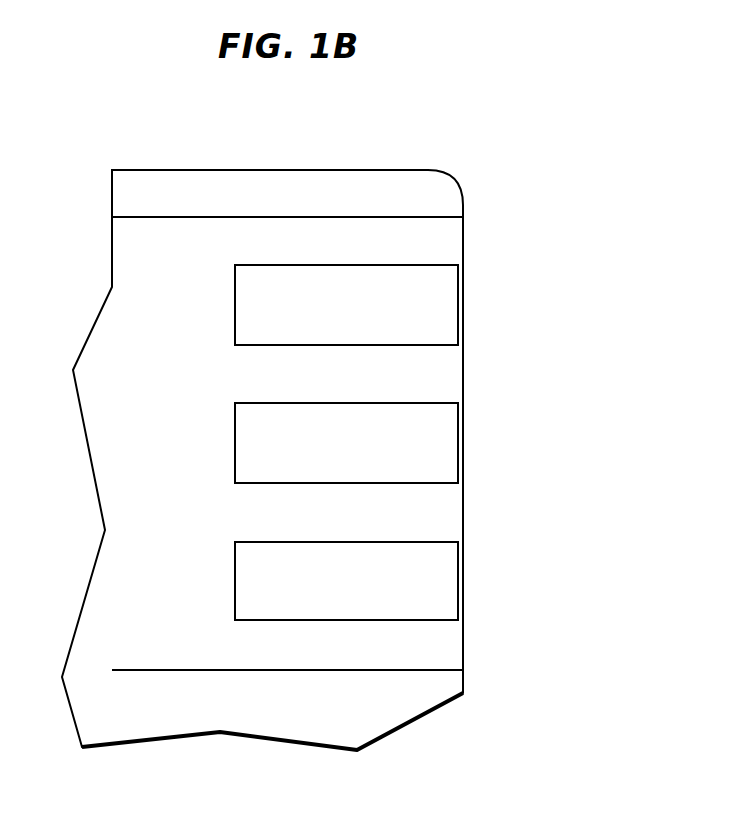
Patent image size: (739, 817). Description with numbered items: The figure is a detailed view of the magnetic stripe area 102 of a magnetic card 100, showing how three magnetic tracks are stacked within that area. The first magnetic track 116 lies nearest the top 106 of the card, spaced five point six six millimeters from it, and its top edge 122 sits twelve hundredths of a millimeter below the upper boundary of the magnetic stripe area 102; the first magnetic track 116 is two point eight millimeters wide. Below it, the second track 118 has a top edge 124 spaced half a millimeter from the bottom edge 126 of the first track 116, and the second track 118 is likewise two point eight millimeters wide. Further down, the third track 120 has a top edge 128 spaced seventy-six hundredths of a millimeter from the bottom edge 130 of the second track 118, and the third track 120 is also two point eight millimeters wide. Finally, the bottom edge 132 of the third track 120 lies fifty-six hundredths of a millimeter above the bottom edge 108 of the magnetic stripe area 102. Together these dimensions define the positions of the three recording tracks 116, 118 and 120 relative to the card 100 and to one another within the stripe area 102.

The card 100 is at (547, 398).
The magnetic stripe area 102 is at (224, 217).
The top of the card 106 is at (313, 170).
The bottom edge of the magnetic stripe area 108 is at (146, 670).
The first magnetic track 116 is at (246, 296).
The second magnetic track 118 is at (246, 434).
The third magnetic track 120 is at (246, 571).
The top edge of the first track 122 is at (411, 265).
The top edge of the second track 124 is at (411, 403).
The bottom edge of the first track 126 is at (243, 347).
The top edge of the third track 128 is at (411, 542).
The bottom edge of the second track 130 is at (243, 485).
The bottom edge of the third track 132 is at (243, 622).